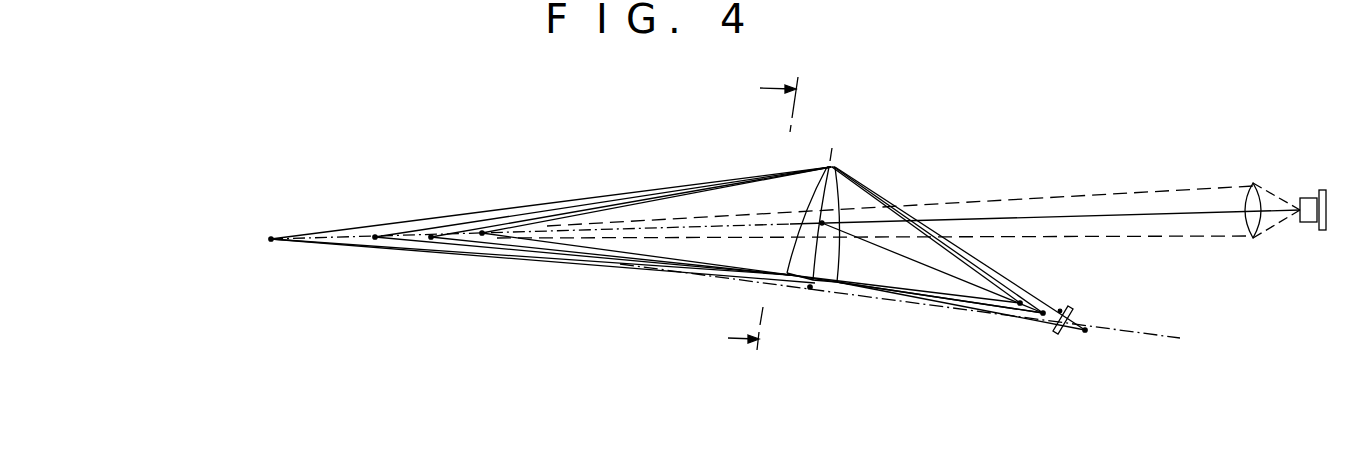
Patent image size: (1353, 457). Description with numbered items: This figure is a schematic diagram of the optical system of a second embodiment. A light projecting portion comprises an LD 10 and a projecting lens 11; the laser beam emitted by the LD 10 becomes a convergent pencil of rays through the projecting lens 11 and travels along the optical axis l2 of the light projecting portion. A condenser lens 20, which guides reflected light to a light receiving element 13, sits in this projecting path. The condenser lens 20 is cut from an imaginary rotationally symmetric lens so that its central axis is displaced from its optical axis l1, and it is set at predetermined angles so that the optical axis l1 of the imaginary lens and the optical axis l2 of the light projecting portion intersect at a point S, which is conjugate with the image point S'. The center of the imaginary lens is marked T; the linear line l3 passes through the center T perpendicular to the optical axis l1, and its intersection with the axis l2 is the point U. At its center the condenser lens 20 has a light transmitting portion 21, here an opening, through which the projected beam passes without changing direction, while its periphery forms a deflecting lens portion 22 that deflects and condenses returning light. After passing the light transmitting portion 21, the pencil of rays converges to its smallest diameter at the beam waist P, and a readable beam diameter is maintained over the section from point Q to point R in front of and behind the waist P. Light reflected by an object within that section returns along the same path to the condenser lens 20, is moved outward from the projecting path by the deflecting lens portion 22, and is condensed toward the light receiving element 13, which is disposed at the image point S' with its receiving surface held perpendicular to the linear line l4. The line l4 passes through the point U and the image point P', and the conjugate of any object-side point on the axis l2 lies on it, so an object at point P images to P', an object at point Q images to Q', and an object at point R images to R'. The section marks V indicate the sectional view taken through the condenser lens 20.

The point Q is at (542, 241).
The beam waist P is at (597, 240).
The point S is at (627, 240).
The point R is at (651, 240).
The condenser lens 20 is at (875, 210).
The light transmitting portion 21 is at (800, 213).
The deflecting lens portion 22 is at (835, 193).
The point U is at (868, 195).
The section line V- V is at (762, 205).
The optical axis of light projecting portion l2 is at (1062, 217).
The projecting lens 11 is at (1253, 239).
The LD 10 is at (1308, 223).
The center of imaginary lens T is at (810, 289).
The linear line l3 is at (809, 290).
The optical axis of imaginary lens l1 is at (880, 297).
The linear line l4 is at (931, 270).
The image point Q' is at (998, 337).
The image point P' is at (1027, 342).
The image point S' is at (1064, 284).
The light receiving element 13 is at (1057, 335).
The image point R' is at (1093, 355).